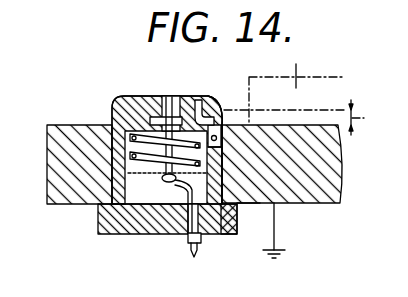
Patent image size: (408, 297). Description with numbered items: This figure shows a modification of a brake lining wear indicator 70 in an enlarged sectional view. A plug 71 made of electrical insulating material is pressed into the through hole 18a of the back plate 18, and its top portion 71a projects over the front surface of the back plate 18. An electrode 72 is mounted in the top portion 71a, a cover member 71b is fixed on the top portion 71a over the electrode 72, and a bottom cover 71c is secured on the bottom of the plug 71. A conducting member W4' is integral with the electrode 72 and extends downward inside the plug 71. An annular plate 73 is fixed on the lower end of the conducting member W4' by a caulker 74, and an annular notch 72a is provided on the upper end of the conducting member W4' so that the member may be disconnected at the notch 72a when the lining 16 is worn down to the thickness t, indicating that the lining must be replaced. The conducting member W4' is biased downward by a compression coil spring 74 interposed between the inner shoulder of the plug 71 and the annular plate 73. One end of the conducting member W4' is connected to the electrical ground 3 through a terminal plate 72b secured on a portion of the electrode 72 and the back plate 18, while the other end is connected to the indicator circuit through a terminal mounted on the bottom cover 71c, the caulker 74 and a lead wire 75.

The switch assembly 70 is at (108, 102).
The electrode 72 is at (147, 95).
The annular notch 72a is at (172, 97).
The terminal plate 72b is at (222, 145).
The plug 71 is at (226, 113).
The top portion 71a is at (211, 100).
The cover member 71b is at (170, 103).
The bottom cover 71c is at (123, 235).
The annular plate 73 is at (84, 204).
The caulker 74 is at (120, 163).
The lead wire 75 is at (156, 228).
The lining 16 is at (188, 243).
The back plate 18 is at (322, 162).
The through hole 18a is at (247, 207).
The electrical ground 3 is at (276, 253).
The thickness t is at (363, 117).
The conducting member W4' is at (79, 148).